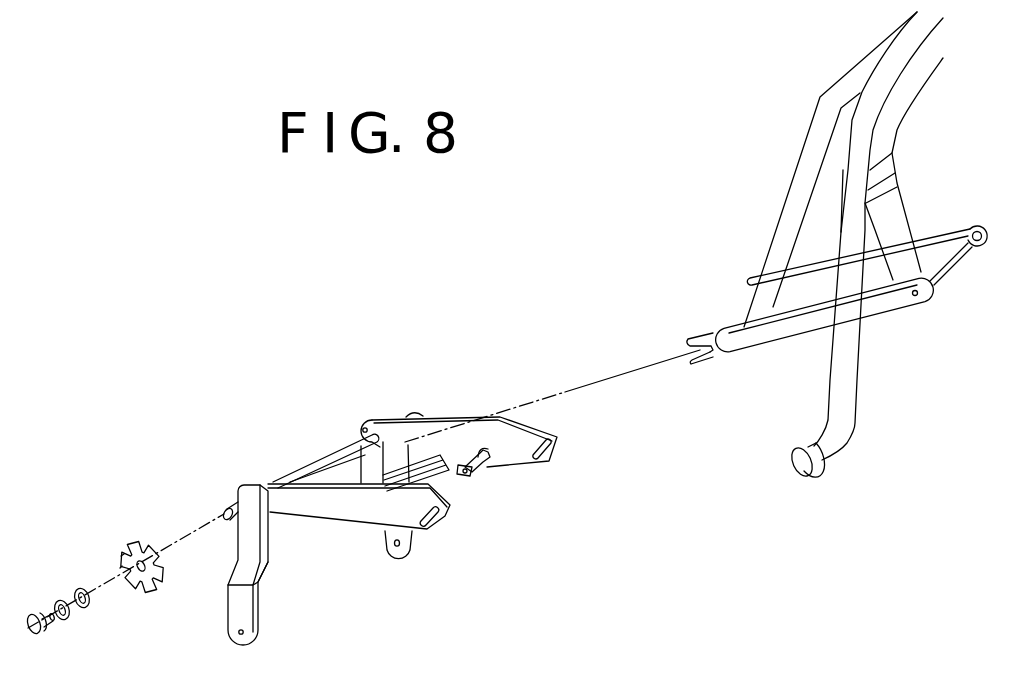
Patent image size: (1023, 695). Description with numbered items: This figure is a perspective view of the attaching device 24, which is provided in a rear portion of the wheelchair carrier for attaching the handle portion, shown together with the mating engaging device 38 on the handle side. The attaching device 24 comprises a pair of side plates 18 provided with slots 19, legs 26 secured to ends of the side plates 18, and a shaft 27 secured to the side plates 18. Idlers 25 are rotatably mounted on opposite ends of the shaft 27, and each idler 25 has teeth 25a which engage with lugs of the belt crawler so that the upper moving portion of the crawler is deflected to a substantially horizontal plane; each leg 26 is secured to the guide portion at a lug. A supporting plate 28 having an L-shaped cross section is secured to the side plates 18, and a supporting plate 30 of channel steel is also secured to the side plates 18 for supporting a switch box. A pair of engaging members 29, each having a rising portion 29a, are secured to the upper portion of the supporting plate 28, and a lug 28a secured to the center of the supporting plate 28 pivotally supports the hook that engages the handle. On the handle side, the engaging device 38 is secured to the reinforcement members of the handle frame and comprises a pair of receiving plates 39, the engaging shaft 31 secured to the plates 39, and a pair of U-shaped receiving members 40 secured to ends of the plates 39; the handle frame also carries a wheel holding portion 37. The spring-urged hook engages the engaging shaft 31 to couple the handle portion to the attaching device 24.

The side plate 18 is at (375, 527).
The slots 19 is at (548, 455).
The attaching device 24 is at (345, 418).
The idler 25 is at (152, 542).
The teeth 25a is at (122, 558).
The leg 26 is at (245, 545).
The shaft 27 is at (333, 452).
The supporting plate 28 is at (445, 490).
The lug 28a is at (473, 480).
The engaging member 29 is at (480, 467).
The rising portion 29a is at (483, 447).
The supporting plate 30 is at (403, 455).
The engaging shaft 31 is at (945, 265).
The wheel holding portion 37 is at (831, 451).
The engaging device 38 is at (745, 192).
The receiving plate 39 is at (953, 238).
The U-shaped receiving member 40 is at (697, 336).